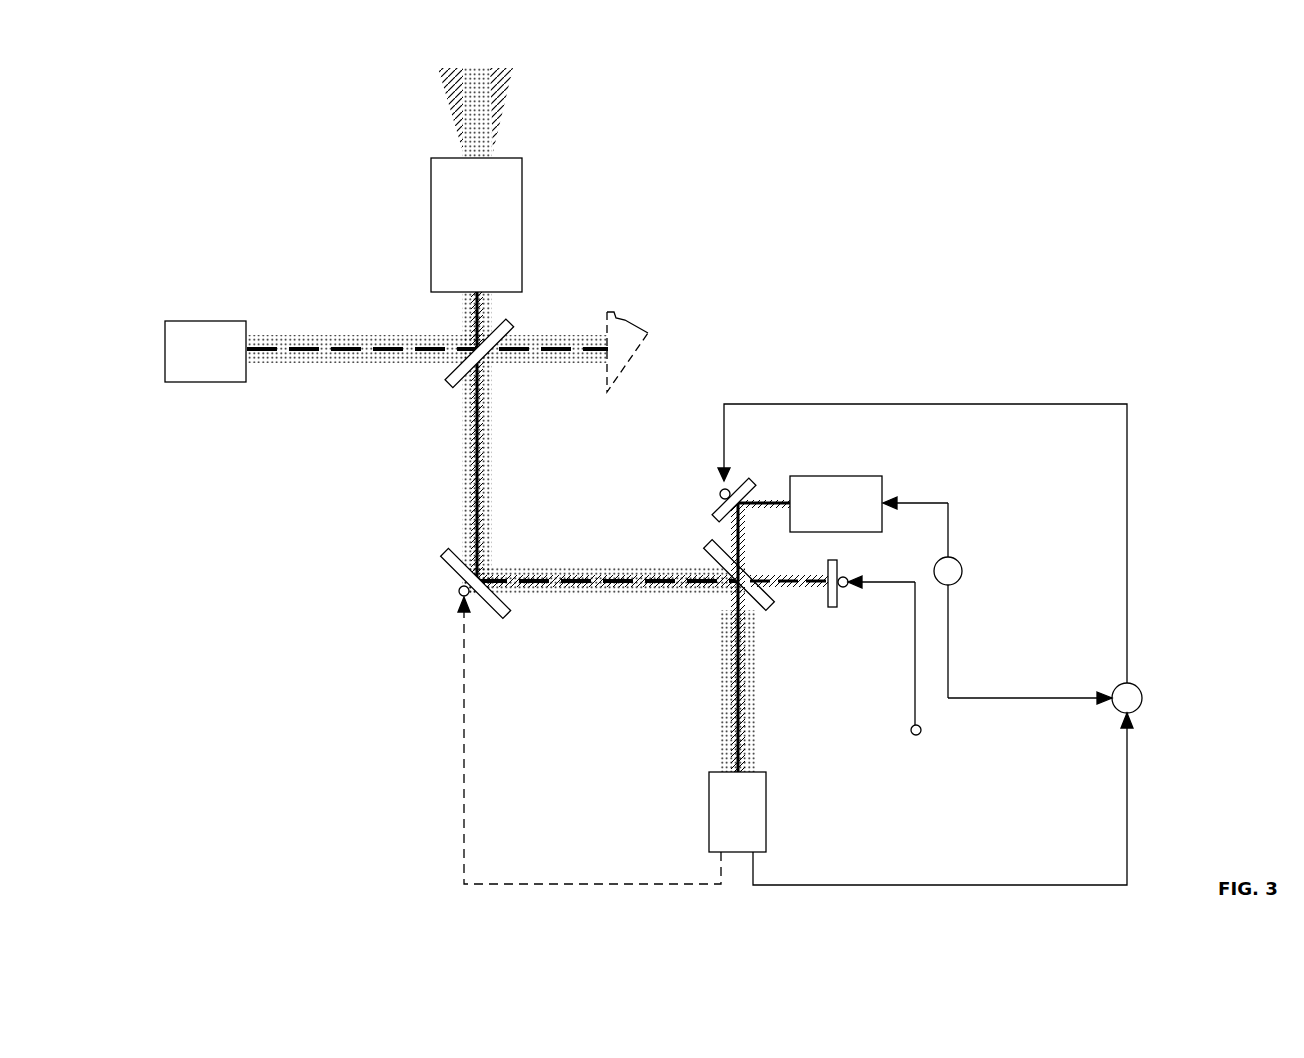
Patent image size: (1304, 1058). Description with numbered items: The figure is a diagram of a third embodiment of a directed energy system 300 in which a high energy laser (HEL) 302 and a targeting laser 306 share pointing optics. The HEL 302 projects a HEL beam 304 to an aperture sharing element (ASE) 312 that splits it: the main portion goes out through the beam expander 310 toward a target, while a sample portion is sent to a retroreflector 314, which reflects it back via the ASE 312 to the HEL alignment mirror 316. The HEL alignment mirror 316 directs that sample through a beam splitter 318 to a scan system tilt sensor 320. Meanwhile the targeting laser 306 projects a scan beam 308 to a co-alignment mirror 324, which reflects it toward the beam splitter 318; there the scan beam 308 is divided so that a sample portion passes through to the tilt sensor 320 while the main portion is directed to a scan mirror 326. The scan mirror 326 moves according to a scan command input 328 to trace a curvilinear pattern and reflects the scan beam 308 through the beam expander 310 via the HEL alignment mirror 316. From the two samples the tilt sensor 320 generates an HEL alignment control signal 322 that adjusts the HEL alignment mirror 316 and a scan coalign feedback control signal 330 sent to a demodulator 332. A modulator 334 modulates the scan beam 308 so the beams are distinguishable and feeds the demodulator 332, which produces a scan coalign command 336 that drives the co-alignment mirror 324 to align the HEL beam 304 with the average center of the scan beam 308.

The directed energy system 300 is at (1003, 195).
The high energy laser (HEL) 302 is at (207, 382).
The HEL beam 304 is at (387, 337).
The targeting laser 306 is at (867, 475).
The scan beam 308 is at (762, 497).
The beam expander 310 is at (430, 227).
The aperture sharing element (ASE) 312 is at (487, 368).
The retroreflector 314 is at (622, 312).
The HEL alignment mirror 316 is at (445, 552).
The beam splitter 318 is at (713, 545).
The scan system tilt sensor 320 is at (709, 810).
The HEL alignment control signal 322 is at (464, 728).
The co-alignment mirror 324 is at (717, 510).
The scan mirror 326 is at (833, 607).
The scan command input 328 is at (910, 726).
The scan coalign feedback control signal 330 is at (1127, 822).
The demodulator 332 is at (1127, 680).
The modulator 334 is at (962, 571).
The scan coalign command 336 is at (1126, 550).